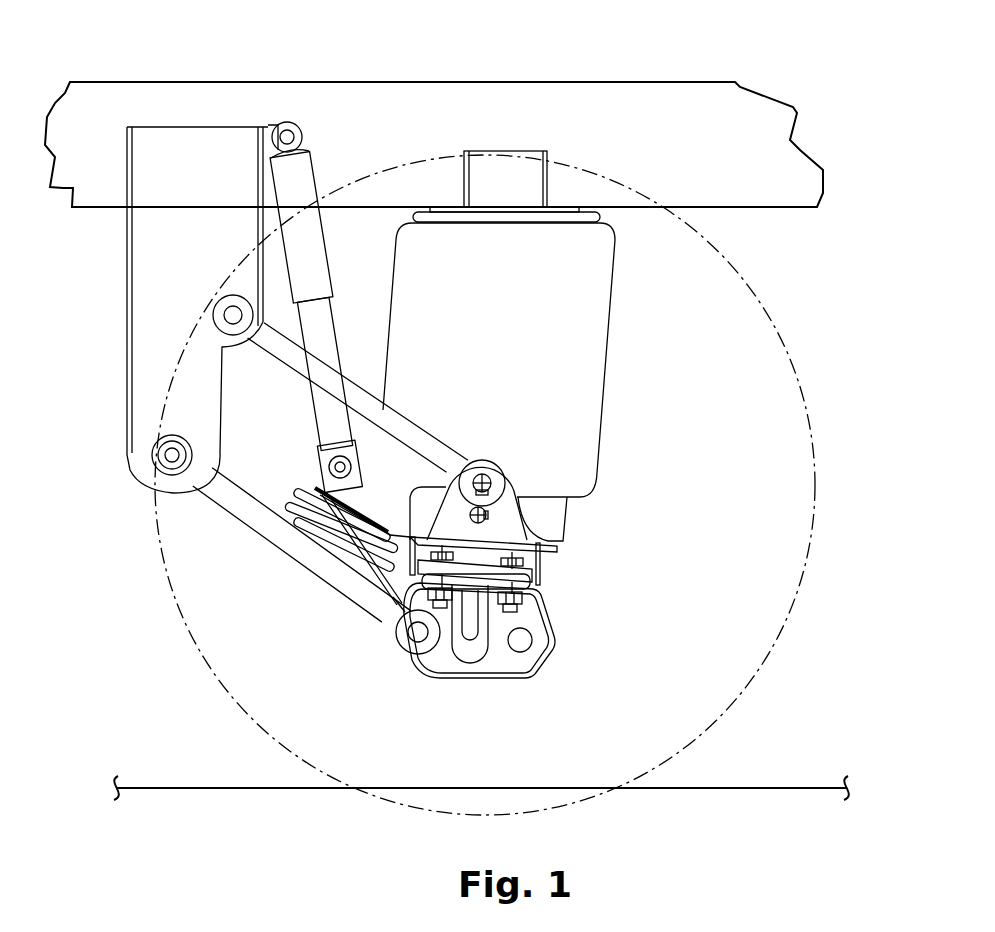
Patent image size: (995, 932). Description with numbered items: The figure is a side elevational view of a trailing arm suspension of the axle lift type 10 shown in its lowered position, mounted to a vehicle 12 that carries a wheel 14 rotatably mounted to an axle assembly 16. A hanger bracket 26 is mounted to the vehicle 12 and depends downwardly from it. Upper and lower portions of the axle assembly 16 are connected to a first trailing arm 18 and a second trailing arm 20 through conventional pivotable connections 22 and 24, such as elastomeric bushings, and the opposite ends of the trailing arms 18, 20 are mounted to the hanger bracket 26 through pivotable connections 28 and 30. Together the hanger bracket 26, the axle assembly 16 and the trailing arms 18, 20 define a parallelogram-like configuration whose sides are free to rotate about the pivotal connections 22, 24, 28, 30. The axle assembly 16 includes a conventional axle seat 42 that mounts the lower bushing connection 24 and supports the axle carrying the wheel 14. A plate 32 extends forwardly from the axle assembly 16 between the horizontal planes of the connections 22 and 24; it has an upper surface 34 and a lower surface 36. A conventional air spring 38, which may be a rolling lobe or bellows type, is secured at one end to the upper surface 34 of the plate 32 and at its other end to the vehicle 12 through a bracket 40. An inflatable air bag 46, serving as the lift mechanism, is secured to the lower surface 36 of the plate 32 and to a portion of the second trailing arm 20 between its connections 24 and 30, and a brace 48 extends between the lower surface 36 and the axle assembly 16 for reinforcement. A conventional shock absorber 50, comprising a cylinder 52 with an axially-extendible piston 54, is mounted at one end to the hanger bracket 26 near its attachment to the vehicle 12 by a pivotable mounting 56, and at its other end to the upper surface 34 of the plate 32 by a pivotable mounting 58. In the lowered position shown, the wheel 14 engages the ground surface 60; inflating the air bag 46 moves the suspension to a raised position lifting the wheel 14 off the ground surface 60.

The axle lift suspension 10 is at (134, 691).
The vehicle 12 is at (540, 83).
The wheel 14 is at (780, 316).
The axle assembly 16 is at (554, 588).
The first trailing arm 18 is at (356, 405).
The second trailing arm 20 is at (313, 553).
The pivotable connection 22 is at (486, 480).
The pivotable connection 24 is at (418, 634).
The hanger bracket 26 is at (128, 304).
The pivotable connection 28 is at (233, 312).
The pivotable connection 30 is at (172, 456).
The plate 32 is at (381, 523).
The upper surface 34 is at (563, 540).
The lower surface 36 is at (403, 590).
The air spring 38 is at (583, 432).
The bracket 40 is at (580, 213).
The axle seat 42 is at (533, 676).
The inflatable air bag 46 is at (316, 492).
The brace 48 is at (363, 582).
The shock absorber 50 is at (320, 305).
The cylinder 52 is at (305, 185).
The piston 54 is at (332, 330).
The pivotable mounting 56 is at (272, 135).
The pivotable mounting 58 is at (323, 470).
The ground surface 60 is at (750, 786).